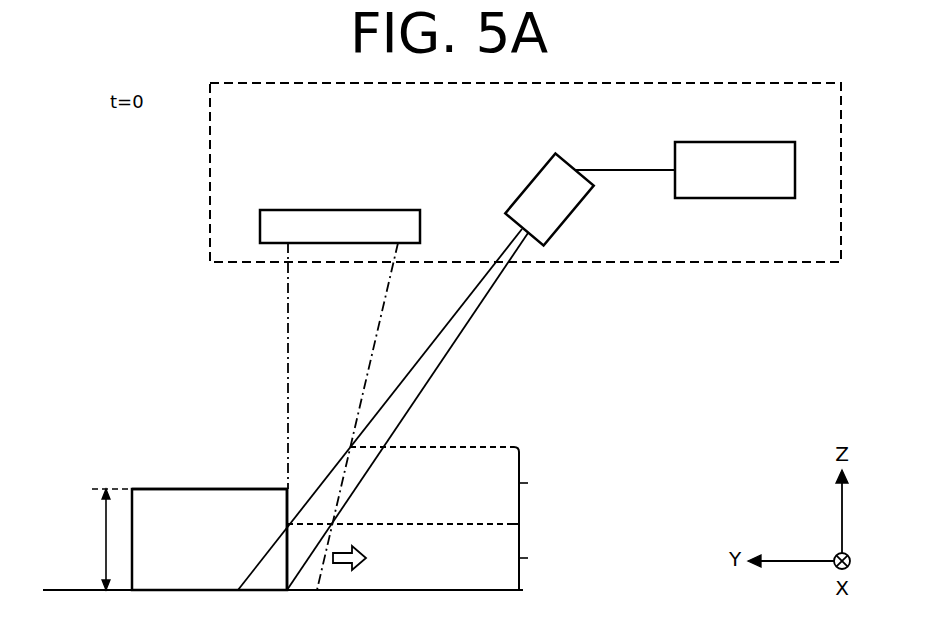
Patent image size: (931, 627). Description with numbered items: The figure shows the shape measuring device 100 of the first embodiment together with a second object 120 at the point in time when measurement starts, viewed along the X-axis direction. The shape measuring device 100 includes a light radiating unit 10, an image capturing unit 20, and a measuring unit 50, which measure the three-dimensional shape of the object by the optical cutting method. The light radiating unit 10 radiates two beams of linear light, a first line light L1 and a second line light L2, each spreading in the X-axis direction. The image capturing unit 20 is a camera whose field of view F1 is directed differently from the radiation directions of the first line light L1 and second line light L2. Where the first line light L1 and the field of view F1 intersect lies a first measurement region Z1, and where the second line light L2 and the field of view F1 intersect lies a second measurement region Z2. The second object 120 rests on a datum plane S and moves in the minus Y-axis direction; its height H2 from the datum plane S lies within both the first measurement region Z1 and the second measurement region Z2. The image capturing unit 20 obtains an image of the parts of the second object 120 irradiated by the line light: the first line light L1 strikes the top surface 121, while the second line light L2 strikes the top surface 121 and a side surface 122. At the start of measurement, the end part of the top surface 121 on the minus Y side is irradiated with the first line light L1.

The light radiating unit 10 is at (388, 210).
The image capturing unit 20 is at (534, 178).
The measuring unit 50 is at (717, 198).
The shape measuring device 100 is at (667, 262).
The second object 120 is at (152, 486).
The top surface 121 is at (218, 489).
The side surface 122 is at (288, 489).
The first line light L1 is at (288, 347).
The second line light L2 is at (376, 347).
The field of view F1 is at (457, 335).
The datum plane S is at (55, 590).
The height H2 is at (100, 539).
The first measurement region Z1 is at (424, 557).
The second measurement region Z2 is at (456, 485).